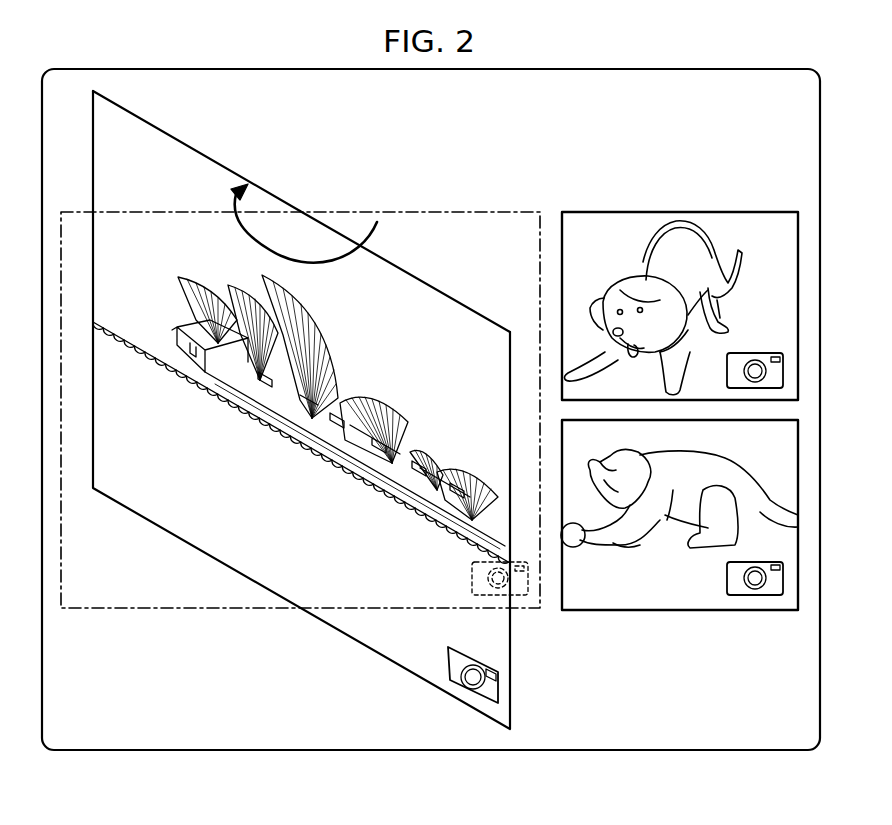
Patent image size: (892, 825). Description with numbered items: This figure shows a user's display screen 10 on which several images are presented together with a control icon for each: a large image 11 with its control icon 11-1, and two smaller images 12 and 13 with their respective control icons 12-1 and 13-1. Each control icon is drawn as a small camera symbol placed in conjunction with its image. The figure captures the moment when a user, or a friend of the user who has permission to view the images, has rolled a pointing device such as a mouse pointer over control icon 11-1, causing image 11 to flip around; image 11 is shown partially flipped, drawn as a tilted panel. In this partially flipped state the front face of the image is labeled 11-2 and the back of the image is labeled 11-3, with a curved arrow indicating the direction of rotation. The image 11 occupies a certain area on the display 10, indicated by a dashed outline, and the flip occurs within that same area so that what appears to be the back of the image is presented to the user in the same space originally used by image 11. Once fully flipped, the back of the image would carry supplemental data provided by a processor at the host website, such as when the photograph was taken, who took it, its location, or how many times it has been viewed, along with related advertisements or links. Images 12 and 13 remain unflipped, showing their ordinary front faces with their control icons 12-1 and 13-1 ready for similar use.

The display screen 10 is at (204, 63).
The image 11 is at (168, 544).
The control icon 11-1 is at (472, 692).
The face of the image 11-2 is at (192, 155).
The back of the image 11-3 is at (433, 302).
The image 12 is at (678, 212).
The control icon 12-1 is at (757, 352).
The image 13 is at (678, 610).
The control icon 13-1 is at (725, 578).